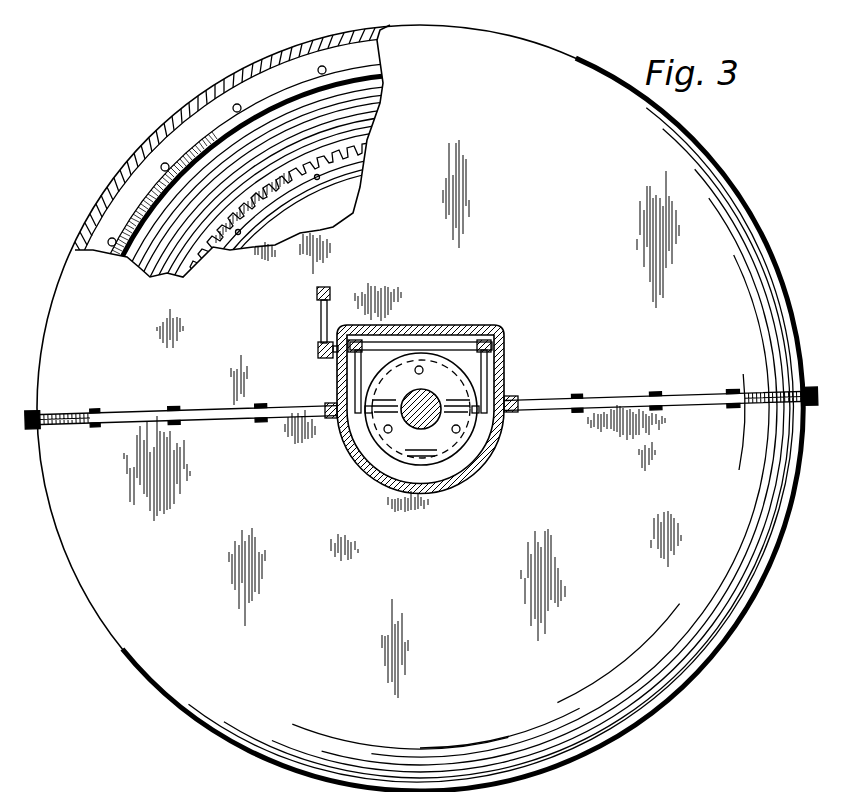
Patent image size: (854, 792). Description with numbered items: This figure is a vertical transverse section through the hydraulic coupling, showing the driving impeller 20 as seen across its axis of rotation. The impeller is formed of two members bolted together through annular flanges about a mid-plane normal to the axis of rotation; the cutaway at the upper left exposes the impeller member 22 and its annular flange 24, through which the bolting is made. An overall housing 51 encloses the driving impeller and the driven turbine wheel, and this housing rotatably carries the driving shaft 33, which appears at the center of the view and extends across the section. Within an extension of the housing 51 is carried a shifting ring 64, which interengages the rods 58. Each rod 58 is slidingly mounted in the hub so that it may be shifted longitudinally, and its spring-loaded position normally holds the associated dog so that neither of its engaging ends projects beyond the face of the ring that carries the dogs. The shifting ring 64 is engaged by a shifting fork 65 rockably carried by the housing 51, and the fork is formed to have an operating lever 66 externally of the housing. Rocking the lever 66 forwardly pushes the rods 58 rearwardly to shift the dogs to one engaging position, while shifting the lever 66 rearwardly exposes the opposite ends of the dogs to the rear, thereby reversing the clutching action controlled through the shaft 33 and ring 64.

The driving impeller 20 is at (207, 152).
The impeller member 22 is at (155, 276).
The annular flange 24 is at (135, 186).
The driving shaft 33 is at (410, 426).
The housing 51 is at (247, 77).
The rod 58 is at (421, 366).
The shifting ring 64 is at (442, 452).
The shifting fork 65 is at (467, 340).
The operating lever 66 is at (320, 330).